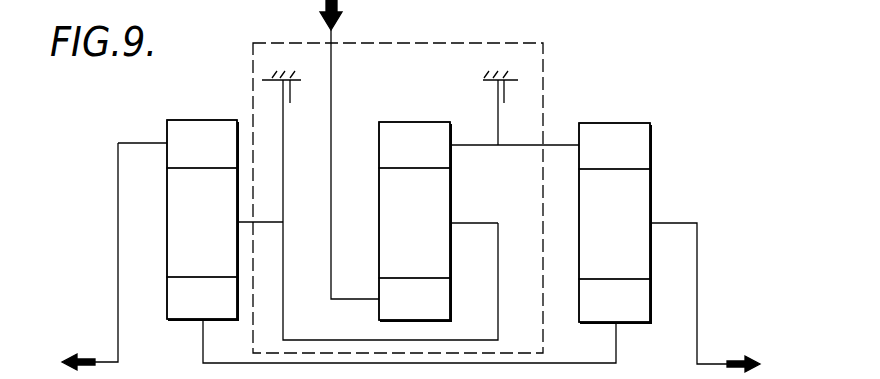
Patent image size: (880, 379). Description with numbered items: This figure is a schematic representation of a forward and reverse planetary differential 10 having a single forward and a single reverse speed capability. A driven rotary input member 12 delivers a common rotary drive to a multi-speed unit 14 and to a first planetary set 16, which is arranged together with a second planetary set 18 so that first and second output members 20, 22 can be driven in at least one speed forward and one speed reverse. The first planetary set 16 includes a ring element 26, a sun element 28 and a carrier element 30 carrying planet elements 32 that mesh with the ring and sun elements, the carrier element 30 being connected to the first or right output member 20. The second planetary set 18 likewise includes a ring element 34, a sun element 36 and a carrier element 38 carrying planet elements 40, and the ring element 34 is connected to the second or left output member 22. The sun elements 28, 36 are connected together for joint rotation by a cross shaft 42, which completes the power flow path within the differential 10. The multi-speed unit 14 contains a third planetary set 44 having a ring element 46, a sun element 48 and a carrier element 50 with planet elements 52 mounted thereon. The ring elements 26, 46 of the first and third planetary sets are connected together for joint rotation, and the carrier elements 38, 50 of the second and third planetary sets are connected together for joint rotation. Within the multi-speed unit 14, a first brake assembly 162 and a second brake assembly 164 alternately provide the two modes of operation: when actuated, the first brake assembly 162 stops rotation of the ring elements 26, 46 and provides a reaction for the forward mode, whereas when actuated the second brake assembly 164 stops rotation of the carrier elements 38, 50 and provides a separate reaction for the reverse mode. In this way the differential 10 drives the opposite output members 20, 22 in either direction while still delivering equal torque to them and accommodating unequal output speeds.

The planetary differential 10 is at (137, 107).
The input member 12 is at (333, 72).
The multi-speed unit 14 is at (491, 40).
The first planetary set 16 is at (612, 120).
The second planetary set 18 is at (210, 118).
The first output member 20 is at (712, 362).
The second output member 22 is at (97, 362).
The ring element 26 is at (614, 146).
The sun element 28 is at (614, 300).
The carrier element 30 is at (671, 223).
The planet elements 32 is at (614, 224).
The ring element 34 is at (202, 144).
The sun element 36 is at (202, 298).
The carrier element 38 is at (268, 222).
The planet elements 40 is at (202, 222).
The cross shaft 42 is at (558, 363).
The third planetary set 44 is at (405, 119).
The ring element 46 is at (414, 145).
The sun element 48 is at (414, 299).
The carrier element 50 is at (468, 223).
The planet elements 52 is at (414, 223).
The first brake assembly 162 is at (508, 96).
The second brake assembly 164 is at (277, 95).